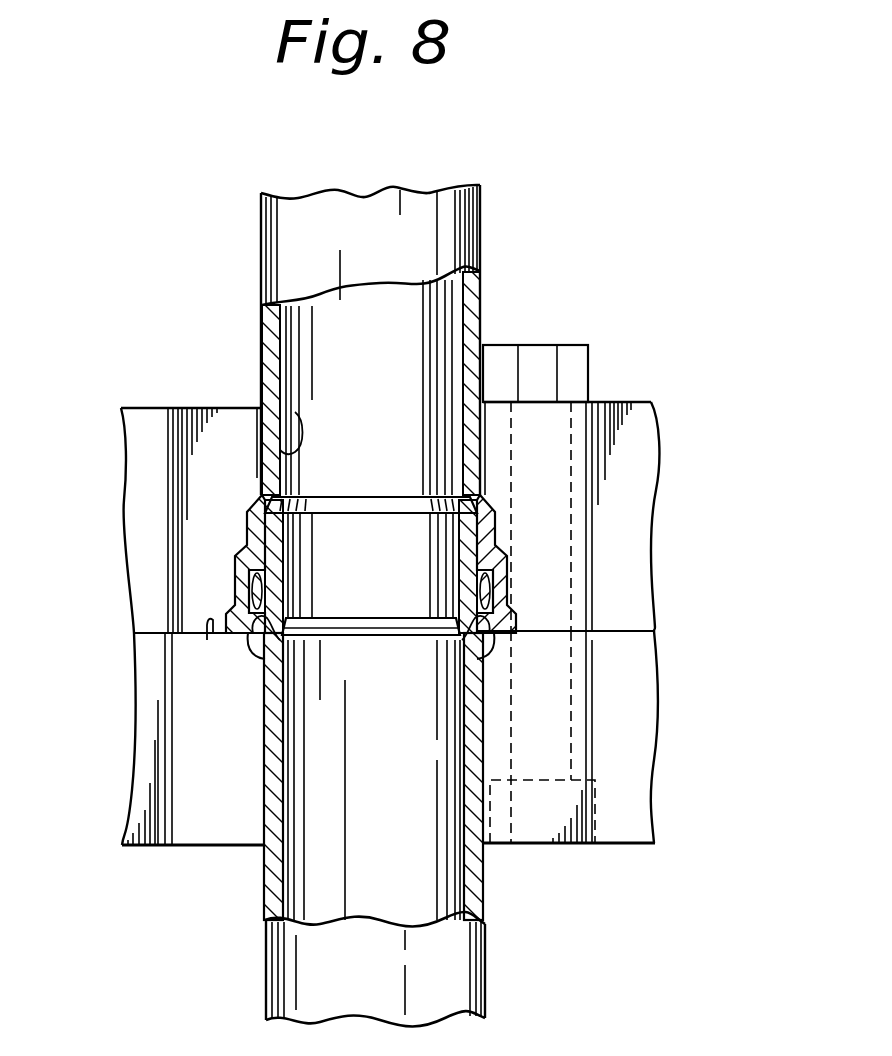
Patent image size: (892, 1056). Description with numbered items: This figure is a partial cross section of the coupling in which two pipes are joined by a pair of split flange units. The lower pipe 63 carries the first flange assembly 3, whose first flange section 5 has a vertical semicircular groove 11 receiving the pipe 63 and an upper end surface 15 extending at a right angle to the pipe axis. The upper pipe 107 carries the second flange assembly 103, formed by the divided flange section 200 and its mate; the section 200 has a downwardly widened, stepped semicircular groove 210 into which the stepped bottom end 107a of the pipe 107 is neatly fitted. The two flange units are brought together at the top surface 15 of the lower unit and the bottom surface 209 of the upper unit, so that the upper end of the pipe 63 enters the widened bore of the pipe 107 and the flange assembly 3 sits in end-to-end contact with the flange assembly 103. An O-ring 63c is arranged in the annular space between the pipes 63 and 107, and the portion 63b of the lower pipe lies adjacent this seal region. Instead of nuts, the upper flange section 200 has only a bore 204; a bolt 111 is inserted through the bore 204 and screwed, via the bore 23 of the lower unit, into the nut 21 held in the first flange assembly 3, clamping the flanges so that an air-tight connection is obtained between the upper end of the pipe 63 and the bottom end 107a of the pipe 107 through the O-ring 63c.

The pipe 107 is at (259, 248).
The semicircular groove 210 is at (295, 412).
The bolts 111 is at (538, 350).
The flange section 200 is at (125, 487).
The flange assembly 103 is at (629, 516).
The bore 204 is at (572, 566).
The bottom end of the pipe 107a is at (240, 600).
The upper collar of inner tube 63b is at (272, 556).
The O-ring 63c is at (267, 596).
The bottom surface 209 is at (160, 636).
The bore 23 is at (575, 676).
The flange assembly 3 is at (622, 737).
The nut 21 is at (590, 815).
The upper end surface 15 is at (207, 640).
The first flange section 5 is at (147, 775).
The groove 11 is at (266, 765).
The pipe 63 is at (265, 990).